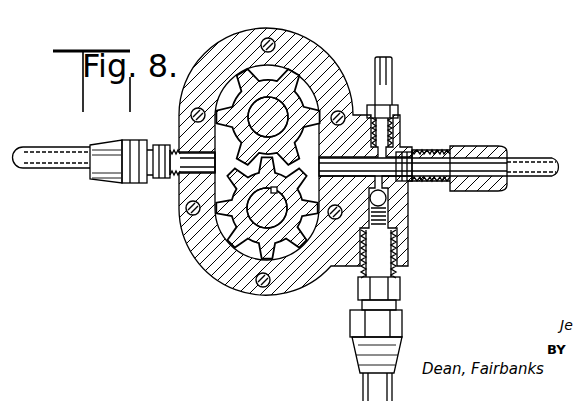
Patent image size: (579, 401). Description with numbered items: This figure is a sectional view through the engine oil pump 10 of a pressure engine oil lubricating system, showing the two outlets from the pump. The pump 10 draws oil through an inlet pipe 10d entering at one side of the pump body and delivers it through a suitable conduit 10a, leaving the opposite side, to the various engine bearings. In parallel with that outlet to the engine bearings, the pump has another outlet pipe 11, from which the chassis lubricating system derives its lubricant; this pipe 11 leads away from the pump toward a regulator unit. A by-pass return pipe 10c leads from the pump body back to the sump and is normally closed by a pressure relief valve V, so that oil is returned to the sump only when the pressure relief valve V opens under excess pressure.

The oil pump 10 is at (316, 43).
The conduit 10a is at (553, 159).
The by-pass return pipe 10c is at (362, 389).
The inlet pipe 10d is at (48, 169).
The outlet pipe 11 is at (389, 81).
The pressure relief valve V is at (400, 204).